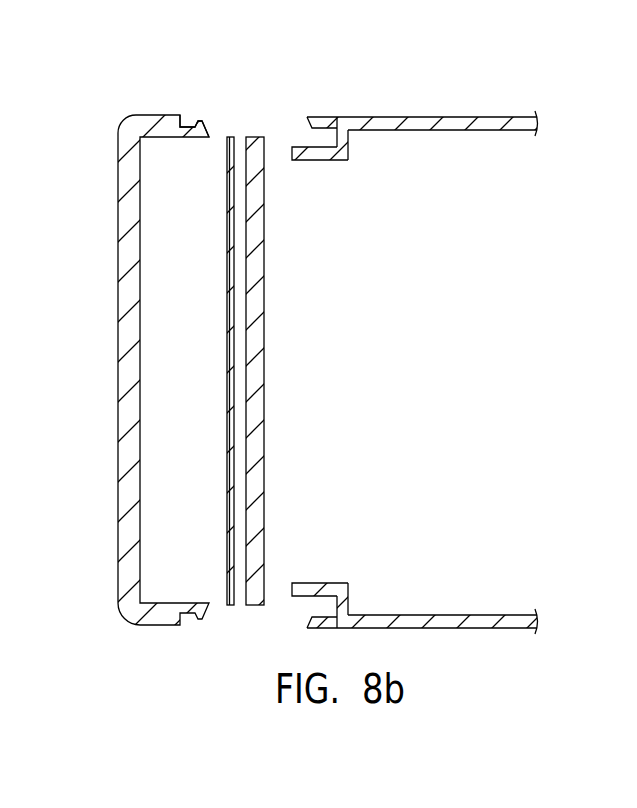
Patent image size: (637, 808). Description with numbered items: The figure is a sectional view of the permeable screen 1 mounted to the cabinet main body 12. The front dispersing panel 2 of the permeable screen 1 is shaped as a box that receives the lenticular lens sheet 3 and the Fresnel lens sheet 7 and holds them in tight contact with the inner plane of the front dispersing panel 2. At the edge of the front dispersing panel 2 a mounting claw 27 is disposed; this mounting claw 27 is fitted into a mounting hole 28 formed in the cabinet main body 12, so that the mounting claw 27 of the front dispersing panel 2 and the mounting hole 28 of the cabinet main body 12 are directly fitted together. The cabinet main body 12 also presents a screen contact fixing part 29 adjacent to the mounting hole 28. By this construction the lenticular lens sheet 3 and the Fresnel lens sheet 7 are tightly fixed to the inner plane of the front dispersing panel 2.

The permeable screen 1 is at (268, 78).
The front dispersing panel 2 is at (118, 282).
The lenticular lens sheet 3 is at (226, 273).
The Fresnel lens sheet 7 is at (253, 322).
The cabinet main body 12 is at (473, 122).
The mounting claw 27 is at (197, 124).
The mounting hole 28 is at (329, 117).
The screen contact fixing part 29 is at (315, 162).